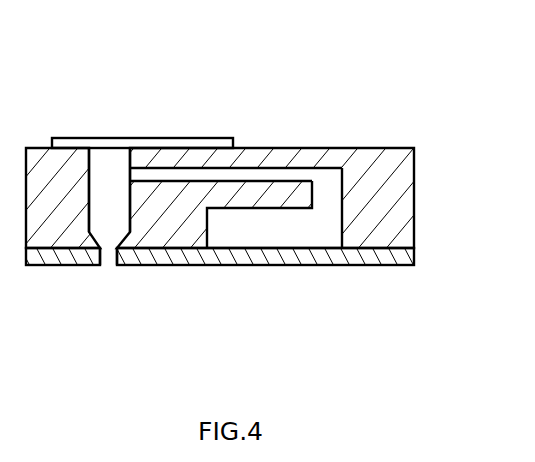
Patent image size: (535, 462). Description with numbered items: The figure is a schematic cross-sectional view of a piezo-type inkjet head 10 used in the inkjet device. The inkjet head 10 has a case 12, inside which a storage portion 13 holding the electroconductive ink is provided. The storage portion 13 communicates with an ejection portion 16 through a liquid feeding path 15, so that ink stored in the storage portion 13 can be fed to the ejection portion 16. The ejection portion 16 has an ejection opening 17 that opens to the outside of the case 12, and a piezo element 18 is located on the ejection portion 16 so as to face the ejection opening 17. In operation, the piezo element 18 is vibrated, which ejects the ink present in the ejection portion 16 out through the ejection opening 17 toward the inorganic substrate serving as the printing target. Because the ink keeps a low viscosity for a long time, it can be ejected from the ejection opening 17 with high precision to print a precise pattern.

The inkjet head 10 is at (452, 79).
The case 12 is at (400, 173).
The storage portion 13 is at (279, 227).
The liquid feeding path 15 is at (237, 179).
The ejection portion 16 is at (105, 199).
The ejection opening 17 is at (109, 262).
The piezo element 18 is at (183, 140).